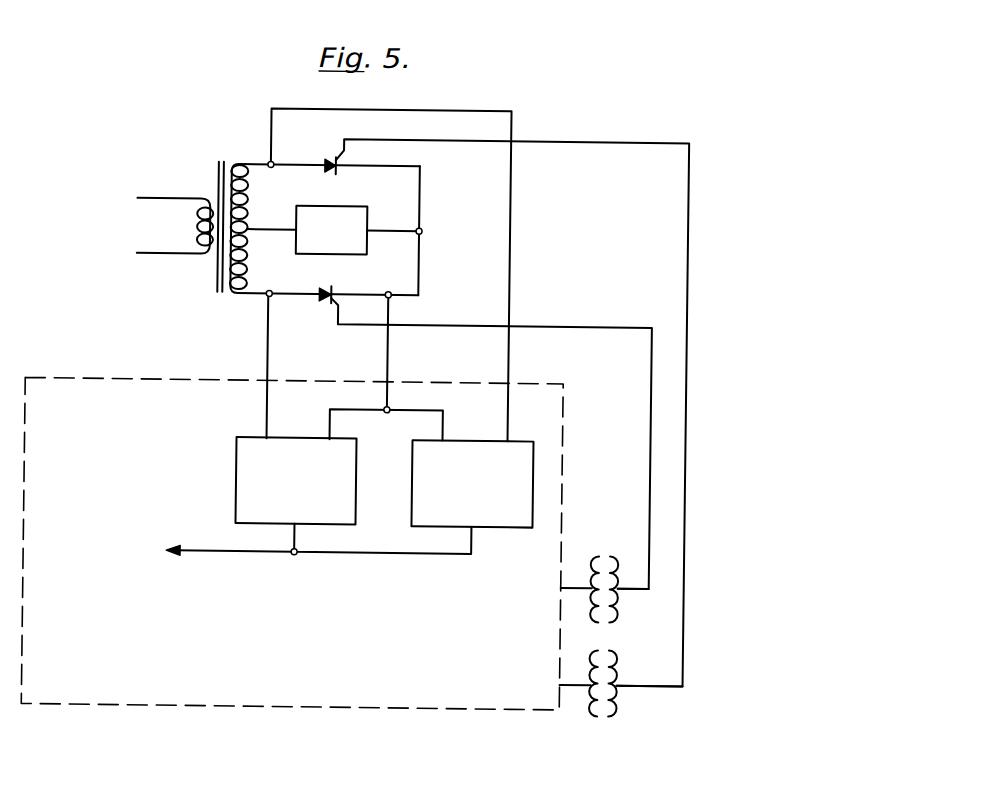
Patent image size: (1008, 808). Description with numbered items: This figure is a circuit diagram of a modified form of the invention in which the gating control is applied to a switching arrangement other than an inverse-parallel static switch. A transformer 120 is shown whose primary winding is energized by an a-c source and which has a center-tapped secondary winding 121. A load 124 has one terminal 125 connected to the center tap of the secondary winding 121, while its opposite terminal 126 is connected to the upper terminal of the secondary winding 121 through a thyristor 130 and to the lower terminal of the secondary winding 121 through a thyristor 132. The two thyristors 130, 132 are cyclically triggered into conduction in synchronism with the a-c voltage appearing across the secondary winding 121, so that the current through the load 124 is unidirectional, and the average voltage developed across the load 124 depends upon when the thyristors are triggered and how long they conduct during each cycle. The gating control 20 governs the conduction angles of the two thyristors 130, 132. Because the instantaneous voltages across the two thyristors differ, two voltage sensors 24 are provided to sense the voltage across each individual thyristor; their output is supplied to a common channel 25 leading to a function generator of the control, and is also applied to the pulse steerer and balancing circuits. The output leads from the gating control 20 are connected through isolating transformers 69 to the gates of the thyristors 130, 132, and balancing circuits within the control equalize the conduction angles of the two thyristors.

The gating control 20 is at (143, 443).
The voltage sensors 24 is at (412, 473).
The common channel 25 is at (235, 554).
The isolating transformers 69 is at (604, 621).
The transformer 120 is at (205, 260).
The center-tapped secondary winding 121 is at (227, 165).
The load 124 is at (350, 258).
The load terminal 125 is at (281, 229).
The load terminal 126 is at (375, 230).
The thyristor 130 is at (327, 173).
The thyristor 132 is at (325, 287).